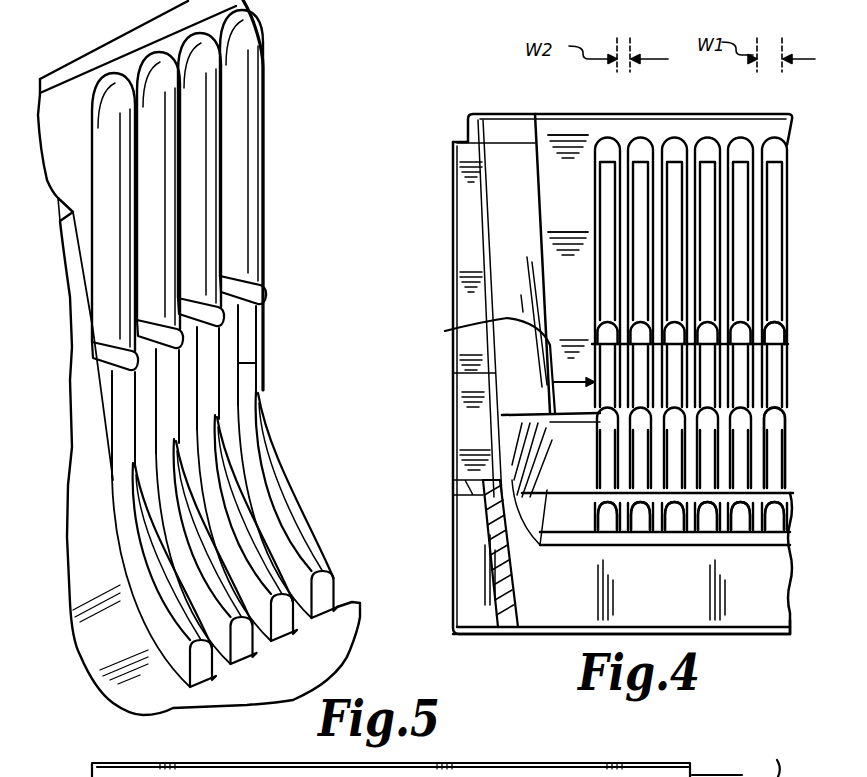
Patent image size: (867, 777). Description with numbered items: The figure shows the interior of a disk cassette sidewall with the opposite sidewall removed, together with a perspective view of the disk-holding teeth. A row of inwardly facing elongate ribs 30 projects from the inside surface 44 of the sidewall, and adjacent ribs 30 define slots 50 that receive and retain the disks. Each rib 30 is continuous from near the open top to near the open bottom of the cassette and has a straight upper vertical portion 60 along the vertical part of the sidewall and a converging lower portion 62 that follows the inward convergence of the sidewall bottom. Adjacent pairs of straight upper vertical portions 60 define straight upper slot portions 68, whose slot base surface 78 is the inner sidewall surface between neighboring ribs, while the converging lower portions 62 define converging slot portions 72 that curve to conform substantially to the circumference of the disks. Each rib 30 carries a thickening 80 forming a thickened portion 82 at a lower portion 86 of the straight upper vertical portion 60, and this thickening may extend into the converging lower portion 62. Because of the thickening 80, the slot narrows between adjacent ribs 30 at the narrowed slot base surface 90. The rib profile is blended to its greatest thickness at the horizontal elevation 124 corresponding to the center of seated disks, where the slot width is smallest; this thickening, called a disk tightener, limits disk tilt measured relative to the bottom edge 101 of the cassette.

In FIG. 5, the ribs 30 is at (262, 58).
In FIG. 4, the ribs 30 is at (740, 203).
In FIG. 4, the inside surface 44 is at (513, 172).
In FIG. 4, the slots 50 is at (657, 219).
In FIG. 5, the straight upper vertical portion 60 is at (245, 138).
In FIG. 5, the converging lower portion 62 is at (282, 498).
In FIG. 4, the converging lower portion 62 is at (772, 478).
In FIG. 5, the straight upper slot portions 68 is at (222, 207).
In FIG. 4, the straight upper slot portions 68 is at (757, 301).
In FIG. 5, the converging slot portions 72 is at (288, 565).
In FIG. 4, the slot base surface 78 is at (757, 258).
In FIG. 5, the thickening 80 is at (238, 364).
In FIG. 4, the thickening 80 is at (785, 398).
In FIG. 4, the thickened portion 82 is at (783, 417).
In FIG. 5, the lower portion 86 is at (263, 322).
In FIG. 4, the narrowed slot base surface 90 is at (757, 370).
In FIG. 4, the bottom edge 101 is at (742, 637).
In FIG. 4, the horizontal elevation 124 is at (495, 365).